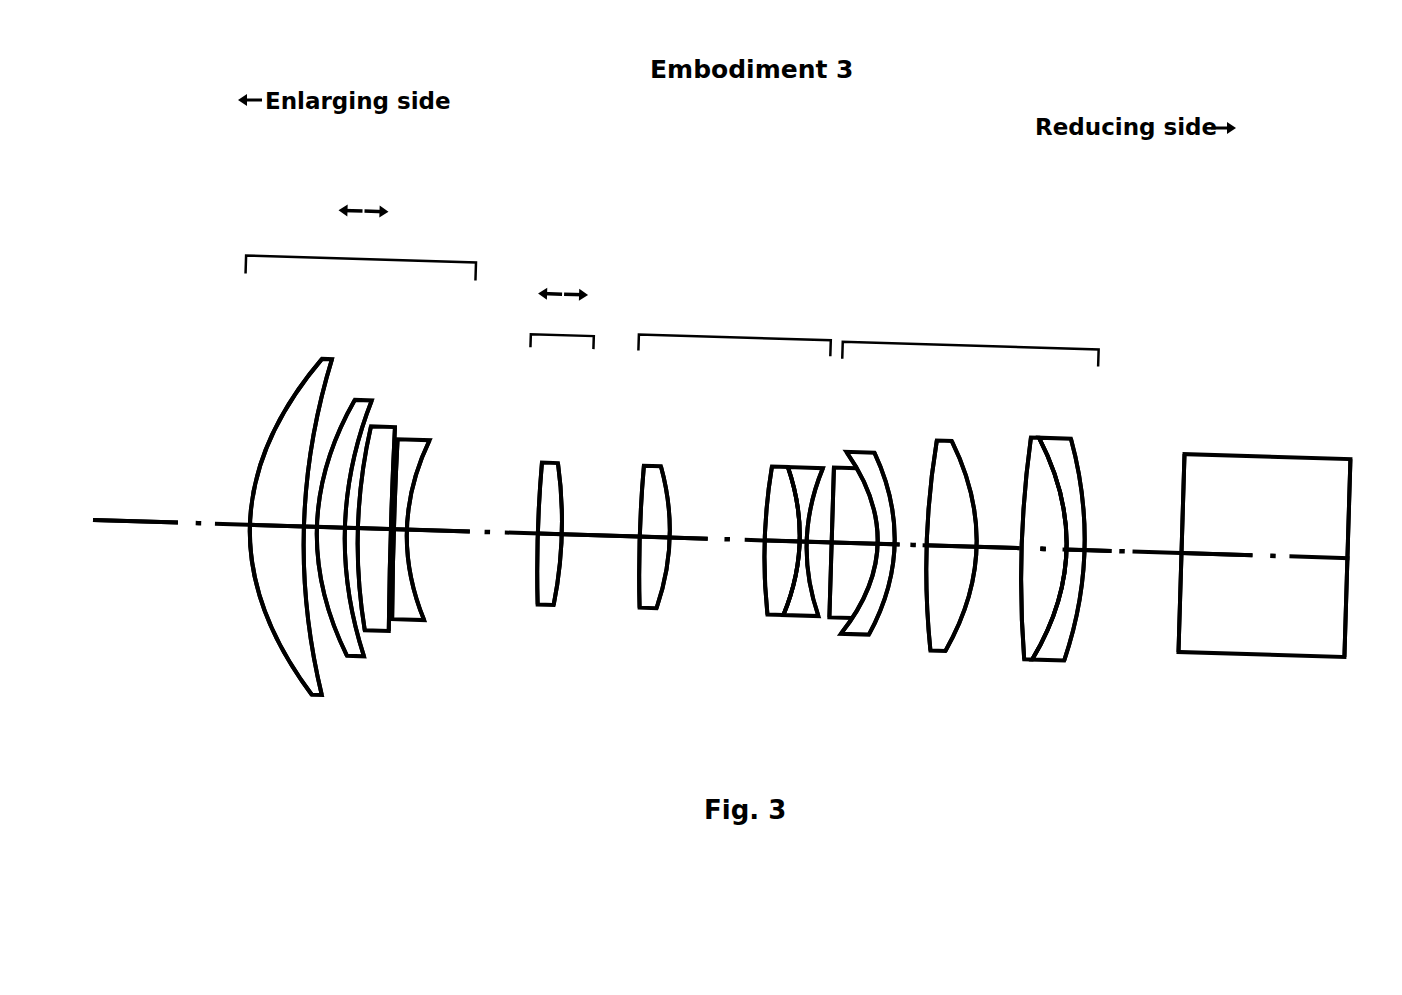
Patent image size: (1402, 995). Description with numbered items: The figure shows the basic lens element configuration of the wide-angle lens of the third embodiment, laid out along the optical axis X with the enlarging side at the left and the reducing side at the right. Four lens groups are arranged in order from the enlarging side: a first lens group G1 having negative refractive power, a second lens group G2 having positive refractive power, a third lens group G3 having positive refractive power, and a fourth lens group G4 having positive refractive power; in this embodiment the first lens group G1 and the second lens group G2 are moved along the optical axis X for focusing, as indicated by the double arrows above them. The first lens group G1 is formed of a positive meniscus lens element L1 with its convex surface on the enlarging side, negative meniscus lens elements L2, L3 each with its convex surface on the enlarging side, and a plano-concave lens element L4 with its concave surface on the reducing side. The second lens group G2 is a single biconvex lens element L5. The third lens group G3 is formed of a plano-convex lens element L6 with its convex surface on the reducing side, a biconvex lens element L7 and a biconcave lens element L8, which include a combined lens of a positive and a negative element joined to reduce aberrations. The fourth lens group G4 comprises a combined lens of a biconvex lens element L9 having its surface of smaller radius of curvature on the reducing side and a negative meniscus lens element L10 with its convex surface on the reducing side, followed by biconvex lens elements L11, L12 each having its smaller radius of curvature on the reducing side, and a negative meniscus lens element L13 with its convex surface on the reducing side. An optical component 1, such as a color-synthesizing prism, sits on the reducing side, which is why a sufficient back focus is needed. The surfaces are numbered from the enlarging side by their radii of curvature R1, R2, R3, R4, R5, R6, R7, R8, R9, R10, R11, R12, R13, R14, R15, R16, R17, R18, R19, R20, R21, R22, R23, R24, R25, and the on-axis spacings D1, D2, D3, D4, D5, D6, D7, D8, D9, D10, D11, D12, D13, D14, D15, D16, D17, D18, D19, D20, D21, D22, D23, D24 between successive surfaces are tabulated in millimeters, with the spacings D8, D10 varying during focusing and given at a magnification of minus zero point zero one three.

The optical component 1 is at (1258, 456).
The optical axis X is at (217, 531).
The first lens group G1 is at (361, 253).
The second lens group G2 is at (561, 328).
The third lens group G3 is at (734, 331).
The fourth lens group G4 is at (970, 341).
The positive meniscus lens element L1 is at (329, 356).
The negative meniscus lens element L2 is at (367, 397).
The negative meniscus lens element L3 is at (386, 424).
The plano-concave lens element L4 is at (413, 436).
The biconvex lens element L5 is at (548, 458).
The plano-convex lens element L6 is at (655, 463).
The biconvex lens element L7 is at (778, 464).
The biconcave lens element L8 is at (806, 464).
The biconvex lens element L9 is at (836, 462).
The negative meniscus lens element L10 is at (858, 449).
The biconvex lens element L11 is at (945, 437).
The biconvex lens element L12 is at (1036, 434).
The negative meniscus lens element L13 is at (1060, 434).
The radius of curvature R1 is at (283, 663).
The radius of curvature R2 is at (320, 690).
The radius of curvature R3 is at (341, 653).
The radius of curvature R4 is at (364, 645).
The radius of curvature R5 is at (386, 634).
The radius of curvature R6 is at (370, 500).
The radius of curvature R7 is at (392, 483).
The radius of curvature R8 is at (430, 455).
The radius of curvature R9 is at (538, 571).
The radius of curvature R10 is at (556, 602).
The radius of curvature R11 is at (640, 603).
The radius of curvature R12 is at (663, 597).
The radius of curvature R13 is at (768, 613).
The radius of curvature R14 is at (788, 616).
The radius of curvature R15 is at (826, 470).
The radius of curvature R16 is at (830, 616).
The radius of curvature R17 is at (862, 631).
The radius of curvature R18 is at (893, 488).
The radius of curvature R19 is at (932, 648).
The radius of curvature R20 is at (947, 648).
The radius of curvature R21 is at (1018, 583).
The radius of curvature R22 is at (1047, 642).
The radius of curvature R23 is at (1083, 588).
The radius of curvature R24 is at (1181, 636).
The radius of curvature R25 is at (1348, 628).
The on-axis spacing D1 is at (277, 539).
The on-axis spacing D2 is at (309, 531).
The on-axis spacing D3 is at (316, 531).
The on-axis spacing D4 is at (341, 541).
The on-axis spacing D5 is at (360, 531).
The on-axis spacing D6 is at (381, 542).
The on-axis spacing D7 is at (400, 531).
The on-axis spacing D8 is at (449, 543).
The on-axis spacing D9 is at (550, 537).
The on-axis spacing D10 is at (601, 548).
The on-axis spacing D11 is at (657, 540).
The on-axis spacing D12 is at (702, 552).
The on-axis spacing D13 is at (772, 543).
The on-axis spacing D14 is at (803, 541).
The on-axis spacing D15 is at (817, 543).
The on-axis spacing D16 is at (855, 555).
The on-axis spacing D17 is at (882, 550).
The on-axis spacing D18 is at (909, 556).
The on-axis spacing D19 is at (952, 557).
The on-axis spacing D20 is at (998, 559).
The on-axis spacing D21 is at (1045, 562).
The on-axis spacing D22 is at (1075, 556).
The on-axis spacing D23 is at (1114, 564).
The on-axis spacing D24 is at (1232, 568).